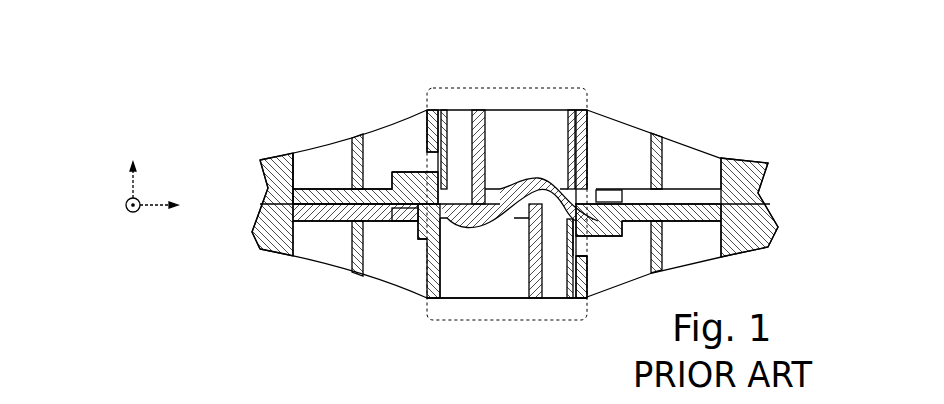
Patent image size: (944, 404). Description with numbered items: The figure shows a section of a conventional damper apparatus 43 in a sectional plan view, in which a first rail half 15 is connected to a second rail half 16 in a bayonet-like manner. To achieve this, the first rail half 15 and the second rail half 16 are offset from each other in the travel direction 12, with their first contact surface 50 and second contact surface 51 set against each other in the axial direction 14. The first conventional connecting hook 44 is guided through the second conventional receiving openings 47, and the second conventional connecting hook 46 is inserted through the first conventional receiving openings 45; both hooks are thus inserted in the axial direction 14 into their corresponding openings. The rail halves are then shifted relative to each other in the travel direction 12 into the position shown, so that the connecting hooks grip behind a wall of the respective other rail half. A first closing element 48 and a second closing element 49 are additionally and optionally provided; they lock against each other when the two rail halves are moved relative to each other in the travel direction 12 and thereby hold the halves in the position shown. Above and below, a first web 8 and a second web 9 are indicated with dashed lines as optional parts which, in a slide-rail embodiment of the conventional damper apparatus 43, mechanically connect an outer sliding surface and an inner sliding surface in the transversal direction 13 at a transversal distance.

The first web 8 is at (574, 320).
The second web 9 is at (450, 100).
The travel direction 12 is at (145, 210).
The transversal direction 13 is at (127, 208).
The axial direction 14 is at (135, 178).
The first rail half 15 is at (466, 286).
The second rail half 16 is at (560, 125).
The conventional damper apparatus 43 is at (793, 50).
The first conventional connecting hook 44 is at (418, 172).
The first conventional receiving openings 45 is at (556, 231).
The second conventional connecting hook 46 is at (592, 238).
The second conventional receiving openings 47 is at (449, 177).
The first closing element 48 is at (475, 232).
The second closing element 49 is at (523, 188).
The first contact surface 50 is at (316, 193).
The second contact surface 51 is at (348, 219).